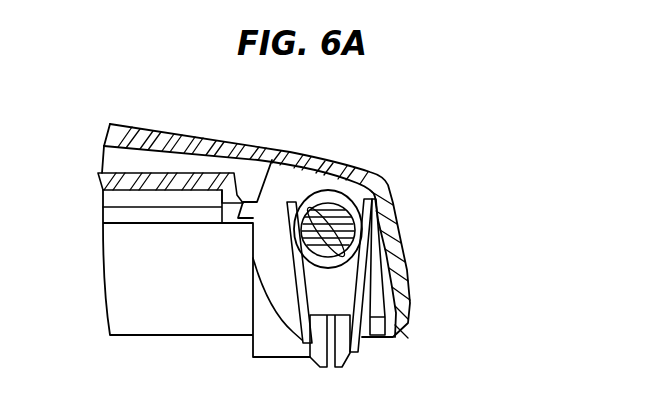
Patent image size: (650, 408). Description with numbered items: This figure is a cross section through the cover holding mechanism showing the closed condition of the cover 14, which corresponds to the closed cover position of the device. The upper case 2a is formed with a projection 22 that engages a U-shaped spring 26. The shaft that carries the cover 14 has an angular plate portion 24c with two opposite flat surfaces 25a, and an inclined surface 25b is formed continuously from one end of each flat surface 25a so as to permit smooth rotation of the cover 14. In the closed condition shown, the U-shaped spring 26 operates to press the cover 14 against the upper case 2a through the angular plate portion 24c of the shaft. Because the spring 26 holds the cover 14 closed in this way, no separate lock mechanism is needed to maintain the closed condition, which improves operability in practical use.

The cover 14 is at (131, 123).
The upper case 2a is at (118, 268).
The inclined surface 25b is at (288, 201).
The flat surface 25a is at (318, 207).
The angular plate portion 24c is at (335, 210).
The U-shaped spring 26 is at (364, 285).
The projection 22 is at (357, 358).